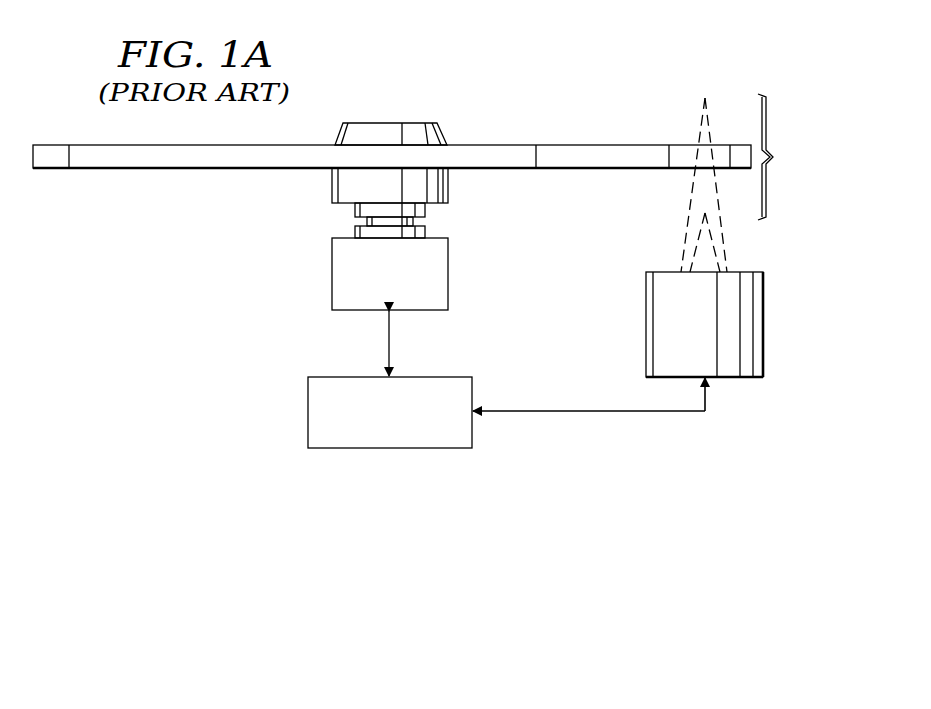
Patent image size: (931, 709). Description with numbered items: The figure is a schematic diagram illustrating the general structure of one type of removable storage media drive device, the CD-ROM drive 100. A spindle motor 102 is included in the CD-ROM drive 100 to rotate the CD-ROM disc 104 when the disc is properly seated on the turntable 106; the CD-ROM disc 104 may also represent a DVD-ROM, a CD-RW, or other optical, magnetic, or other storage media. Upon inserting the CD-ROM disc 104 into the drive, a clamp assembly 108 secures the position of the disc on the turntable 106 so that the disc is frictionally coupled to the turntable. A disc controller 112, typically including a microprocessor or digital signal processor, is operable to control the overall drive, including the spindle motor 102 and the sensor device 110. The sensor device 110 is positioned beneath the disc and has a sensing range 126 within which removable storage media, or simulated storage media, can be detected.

The CD-ROM drive 100 is at (220, 339).
The spindle motor 102 is at (332, 275).
The CD-ROM disc 104 is at (217, 169).
The turntable 106 is at (332, 188).
The clamp assembly 108 is at (376, 122).
The sensor device 110 is at (764, 325).
The disc controller 112 is at (308, 414).
The sensing range 126 is at (788, 157).